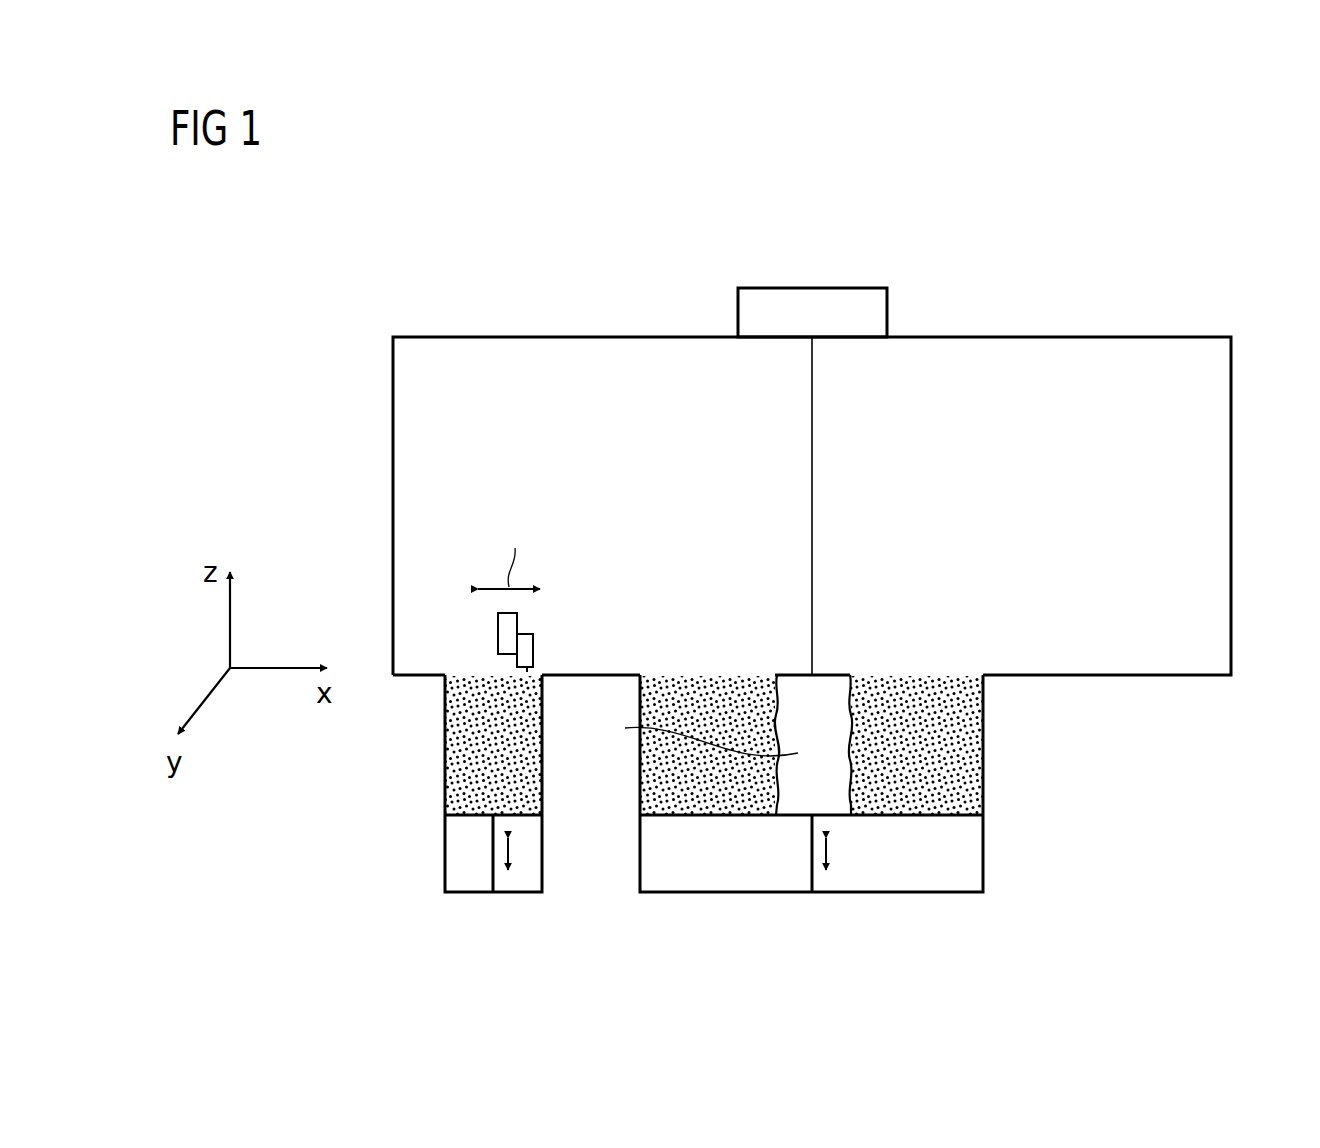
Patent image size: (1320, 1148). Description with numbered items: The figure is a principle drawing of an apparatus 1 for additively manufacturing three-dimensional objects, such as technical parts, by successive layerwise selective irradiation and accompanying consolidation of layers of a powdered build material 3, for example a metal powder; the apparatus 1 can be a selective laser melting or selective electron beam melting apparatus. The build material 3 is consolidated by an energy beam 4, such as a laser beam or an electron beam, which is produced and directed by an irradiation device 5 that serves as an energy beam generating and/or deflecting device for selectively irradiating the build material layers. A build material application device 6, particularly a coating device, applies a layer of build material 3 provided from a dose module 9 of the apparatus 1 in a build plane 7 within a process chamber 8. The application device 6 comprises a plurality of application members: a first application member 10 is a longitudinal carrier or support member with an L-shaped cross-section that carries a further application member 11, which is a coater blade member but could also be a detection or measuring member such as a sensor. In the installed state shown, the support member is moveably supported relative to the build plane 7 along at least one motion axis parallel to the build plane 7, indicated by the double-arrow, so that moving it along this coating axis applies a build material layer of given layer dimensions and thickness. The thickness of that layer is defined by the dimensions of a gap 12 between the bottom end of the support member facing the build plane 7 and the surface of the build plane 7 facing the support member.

The apparatus 1 is at (1033, 198).
The powdered build material 3 is at (465, 746).
The energy beam 4 is at (814, 410).
The irradiation device 5 is at (812, 287).
The build material application device 6 is at (563, 568).
The build plane 7 is at (788, 650).
The process chamber 8 is at (1088, 335).
The dose module 9 is at (417, 799).
The first application member 10 is at (505, 628).
The further application member 11 is at (525, 646).
The gap 12 is at (526, 673).